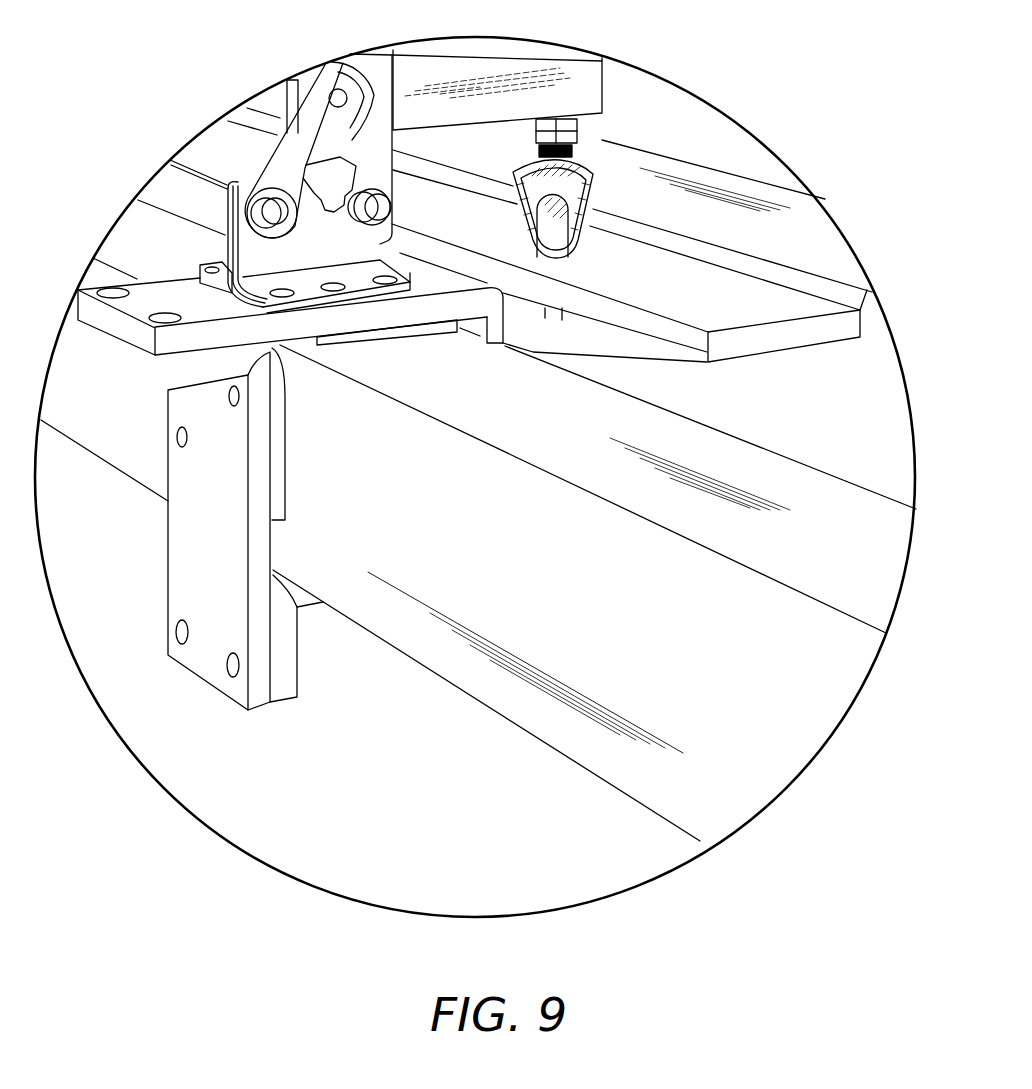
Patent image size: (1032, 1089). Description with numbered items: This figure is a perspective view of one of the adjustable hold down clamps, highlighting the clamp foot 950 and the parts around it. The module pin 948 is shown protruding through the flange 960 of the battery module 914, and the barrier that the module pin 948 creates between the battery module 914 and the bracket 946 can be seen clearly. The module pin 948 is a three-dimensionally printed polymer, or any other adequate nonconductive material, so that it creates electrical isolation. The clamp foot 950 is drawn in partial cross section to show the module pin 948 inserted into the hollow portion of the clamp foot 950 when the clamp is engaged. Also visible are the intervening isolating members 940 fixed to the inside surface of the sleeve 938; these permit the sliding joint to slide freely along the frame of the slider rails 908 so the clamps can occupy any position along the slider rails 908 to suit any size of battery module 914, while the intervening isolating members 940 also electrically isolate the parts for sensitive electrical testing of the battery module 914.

The slider rails 908 is at (423, 667).
The battery module 914 is at (793, 225).
The sleeve 938 is at (197, 560).
The intervening isolating members 940 is at (395, 345).
The bracket 946 is at (533, 352).
The module pin 948 is at (571, 245).
The clamp foot 950 is at (593, 190).
The flange 960 is at (777, 311).